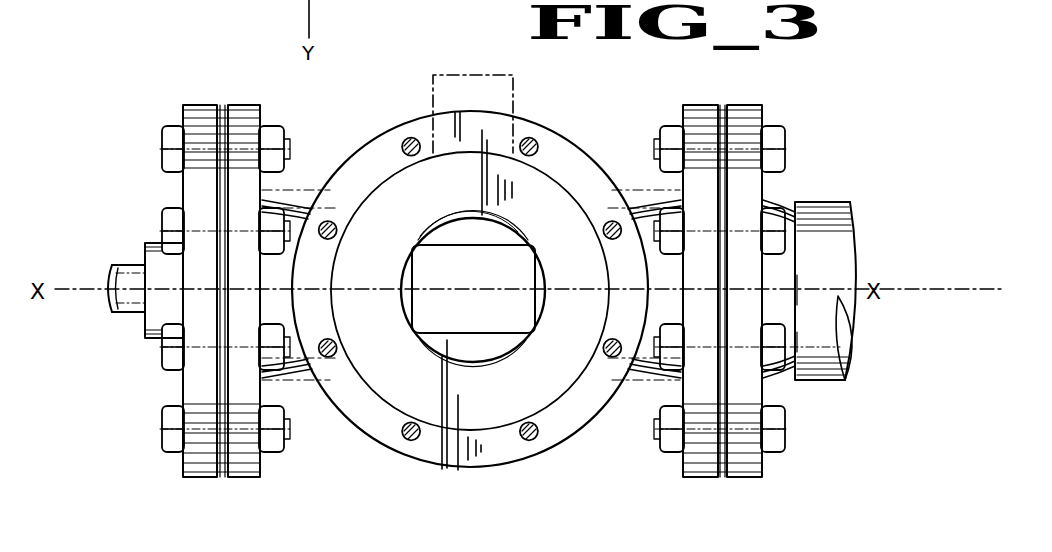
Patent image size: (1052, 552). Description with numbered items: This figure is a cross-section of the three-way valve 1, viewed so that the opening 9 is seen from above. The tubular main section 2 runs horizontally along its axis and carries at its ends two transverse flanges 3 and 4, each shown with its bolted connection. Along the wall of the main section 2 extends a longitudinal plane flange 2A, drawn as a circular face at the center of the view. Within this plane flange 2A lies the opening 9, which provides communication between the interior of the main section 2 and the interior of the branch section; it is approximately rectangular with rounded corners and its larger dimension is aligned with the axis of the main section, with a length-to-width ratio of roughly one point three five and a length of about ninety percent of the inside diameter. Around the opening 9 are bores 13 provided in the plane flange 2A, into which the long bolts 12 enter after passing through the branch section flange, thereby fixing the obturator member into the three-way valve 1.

The three-way valve 1 is at (607, 104).
The tubular main section 2 is at (648, 382).
The longitudinal plane flange 2A is at (470, 470).
The transverse flange 3 is at (262, 104).
The transverse flange 4 is at (706, 104).
The opening 9 is at (523, 260).
The long bolts 12 is at (419, 138).
The bores 13 is at (409, 146).